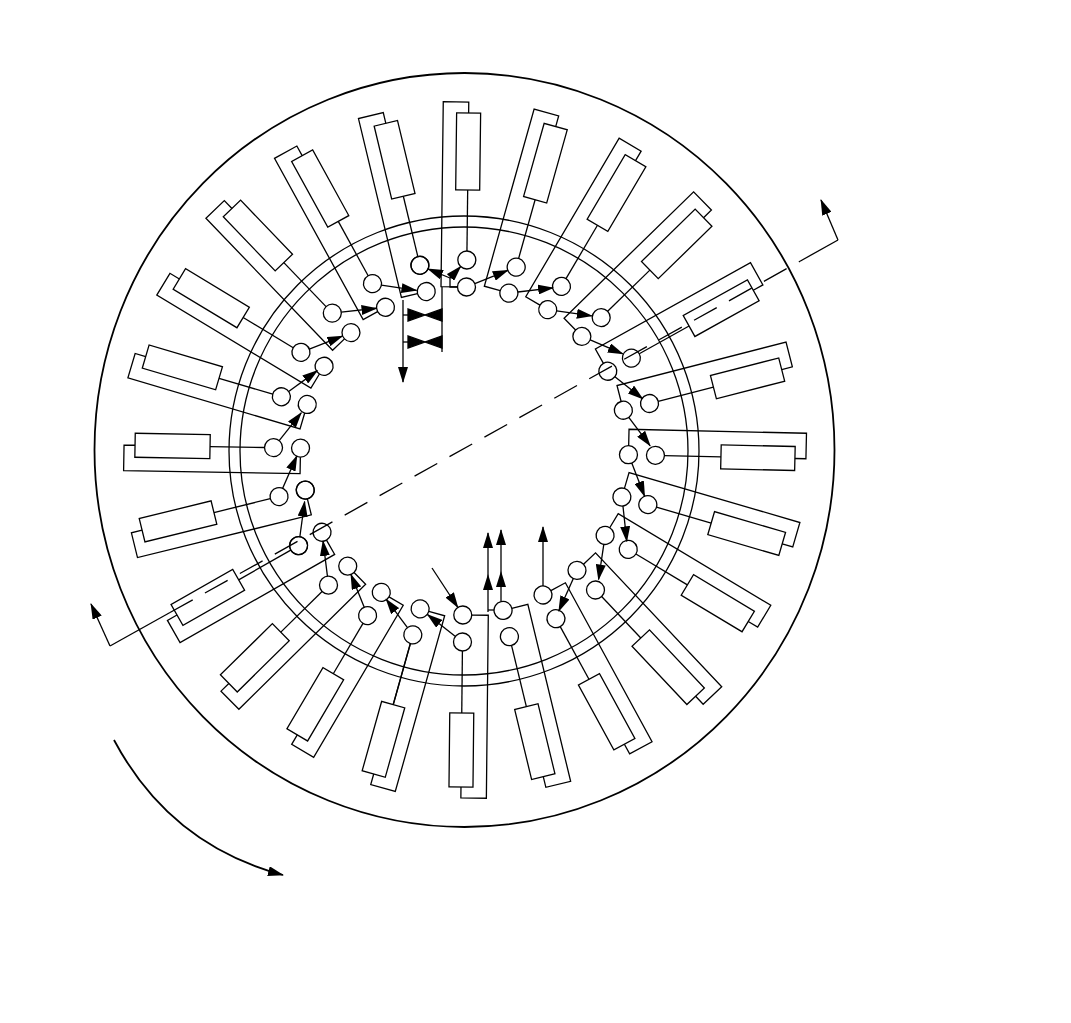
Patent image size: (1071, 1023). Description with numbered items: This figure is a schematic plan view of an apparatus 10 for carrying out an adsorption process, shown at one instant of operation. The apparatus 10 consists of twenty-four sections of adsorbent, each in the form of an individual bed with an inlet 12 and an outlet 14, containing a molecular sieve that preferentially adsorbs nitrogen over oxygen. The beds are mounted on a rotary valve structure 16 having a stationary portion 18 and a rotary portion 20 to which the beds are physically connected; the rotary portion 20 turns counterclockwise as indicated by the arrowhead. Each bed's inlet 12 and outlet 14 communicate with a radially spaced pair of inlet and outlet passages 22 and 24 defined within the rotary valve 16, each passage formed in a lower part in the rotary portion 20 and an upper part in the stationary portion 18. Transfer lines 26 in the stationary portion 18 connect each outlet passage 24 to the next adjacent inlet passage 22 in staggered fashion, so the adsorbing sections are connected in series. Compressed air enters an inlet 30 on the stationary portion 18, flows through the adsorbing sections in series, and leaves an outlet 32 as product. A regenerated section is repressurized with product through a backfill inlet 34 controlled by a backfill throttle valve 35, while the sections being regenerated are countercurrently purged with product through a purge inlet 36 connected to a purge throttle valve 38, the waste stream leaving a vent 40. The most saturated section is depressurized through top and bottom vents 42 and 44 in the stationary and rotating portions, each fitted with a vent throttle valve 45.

The apparatus 10 is at (678, 61).
The inlet 12 is at (489, 722).
The outlet 14 is at (457, 703).
The rotary valve structure 16 is at (50, 518).
The stationary portion 18 is at (560, 670).
The rotary portion 20 is at (686, 757).
The inlet passage 22 is at (316, 487).
The outlet passage 24 is at (290, 549).
The transfer line 26 is at (402, 662).
The inlet 30 is at (438, 579).
The outlet 32 is at (408, 366).
The backfill inlet 34 is at (420, 256).
The backfill throttle valve 35 is at (444, 342).
The purge inlet 36 is at (444, 315).
The purge throttle valve 38 is at (442, 350).
The vent 40 is at (546, 565).
The top vent 42 is at (487, 535).
The bottom vent 44 is at (502, 528).
The vent throttle valve 45 is at (485, 571).